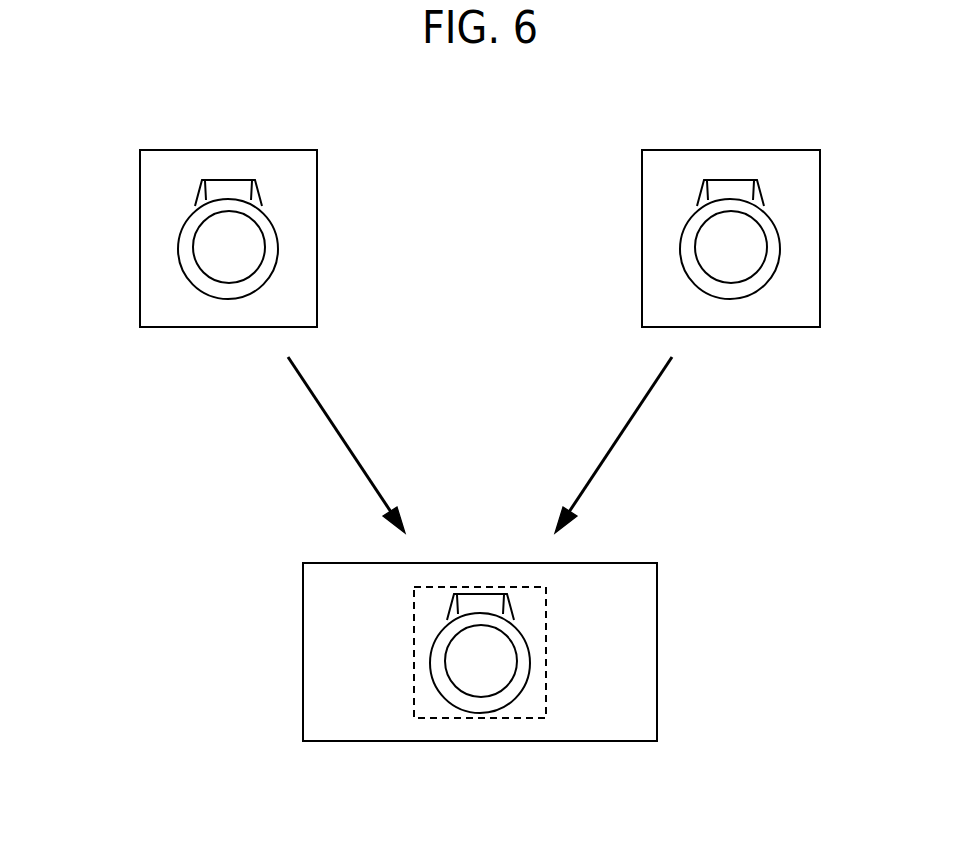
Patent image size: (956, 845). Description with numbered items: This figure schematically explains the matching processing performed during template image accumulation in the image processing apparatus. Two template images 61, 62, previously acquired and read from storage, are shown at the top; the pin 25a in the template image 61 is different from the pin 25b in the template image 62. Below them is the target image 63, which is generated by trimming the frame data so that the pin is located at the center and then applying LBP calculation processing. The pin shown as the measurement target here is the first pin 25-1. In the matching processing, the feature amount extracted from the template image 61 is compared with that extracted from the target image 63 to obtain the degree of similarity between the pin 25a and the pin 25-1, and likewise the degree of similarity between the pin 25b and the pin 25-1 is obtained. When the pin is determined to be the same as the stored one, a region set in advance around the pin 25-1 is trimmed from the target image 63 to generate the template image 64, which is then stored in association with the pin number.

The template image 61 is at (272, 150).
The template image 62 is at (776, 150).
The target image 63 is at (650, 563).
The template image 64 is at (437, 720).
The pin 25a is at (207, 248).
The pin 25b is at (709, 248).
The first pin 25-1 is at (455, 663).